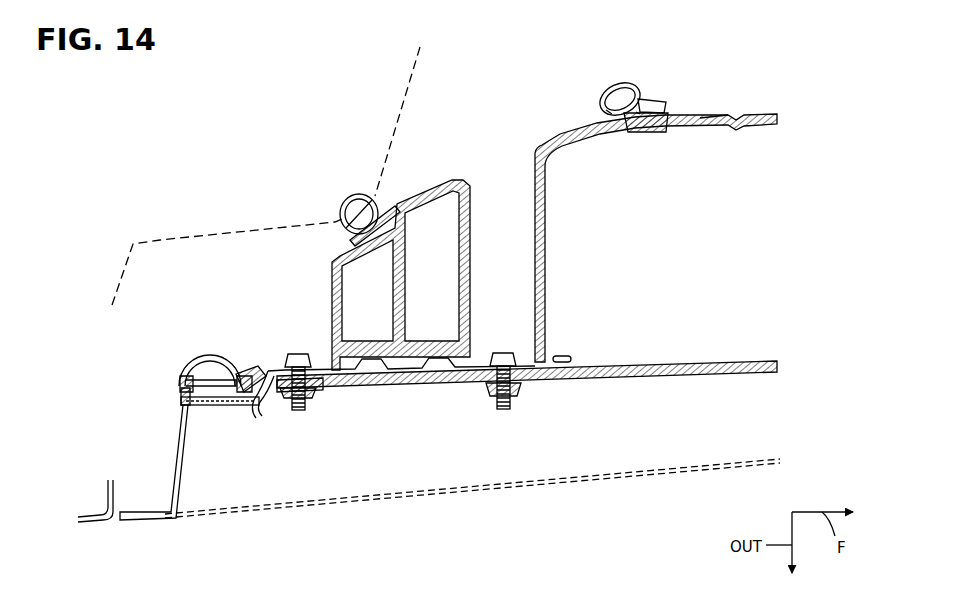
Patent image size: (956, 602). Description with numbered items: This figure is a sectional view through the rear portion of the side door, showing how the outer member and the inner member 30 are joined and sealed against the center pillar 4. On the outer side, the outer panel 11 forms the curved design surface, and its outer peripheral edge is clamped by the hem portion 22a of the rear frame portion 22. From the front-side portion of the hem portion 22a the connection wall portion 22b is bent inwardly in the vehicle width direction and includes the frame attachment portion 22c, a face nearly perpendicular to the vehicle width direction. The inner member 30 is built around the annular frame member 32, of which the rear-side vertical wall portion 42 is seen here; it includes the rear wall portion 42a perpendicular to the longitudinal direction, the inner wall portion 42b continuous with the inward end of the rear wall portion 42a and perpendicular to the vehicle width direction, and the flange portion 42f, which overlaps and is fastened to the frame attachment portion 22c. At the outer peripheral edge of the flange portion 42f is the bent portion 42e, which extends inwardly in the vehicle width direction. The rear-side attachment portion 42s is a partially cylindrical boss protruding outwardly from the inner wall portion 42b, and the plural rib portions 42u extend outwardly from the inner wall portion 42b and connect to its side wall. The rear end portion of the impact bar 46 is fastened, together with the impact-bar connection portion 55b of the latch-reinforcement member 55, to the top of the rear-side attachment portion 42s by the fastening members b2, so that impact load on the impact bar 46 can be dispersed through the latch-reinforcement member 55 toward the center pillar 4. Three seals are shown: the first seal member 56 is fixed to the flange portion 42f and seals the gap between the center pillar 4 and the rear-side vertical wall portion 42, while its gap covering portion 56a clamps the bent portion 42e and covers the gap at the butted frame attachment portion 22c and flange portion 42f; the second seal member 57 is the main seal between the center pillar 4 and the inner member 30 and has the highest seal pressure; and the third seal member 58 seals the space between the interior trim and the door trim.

The center pillar 4 is at (417, 70).
The outer panel 11 is at (233, 517).
The rear frame portion 22 is at (171, 463).
The hem portion 22a is at (147, 512).
The connection wall portion 22b is at (180, 478).
The frame attachment portion 22c is at (228, 406).
The inner member 30 is at (356, 180).
The frame member 32 is at (356, 180).
The rear-side vertical wall portion 42 is at (445, 270).
The rear wall portion 42a is at (273, 391).
The inner wall portion 42b is at (740, 117).
The bent portion 42e is at (183, 392).
The flange portion 42f is at (260, 405).
The rear-side attachment portion 42s is at (545, 238).
The rib portions 42u is at (332, 310).
The impact bar 46 is at (758, 361).
The latch-reinforcement member 55 is at (590, 329).
The impact-bar connection portion 55b is at (607, 315).
The first seal member 56 is at (199, 344).
The gap covering portion 56a is at (181, 402).
The second seal member 57 is at (343, 200).
The third seal member 58 is at (638, 85).
The fastening members b2 is at (296, 402).